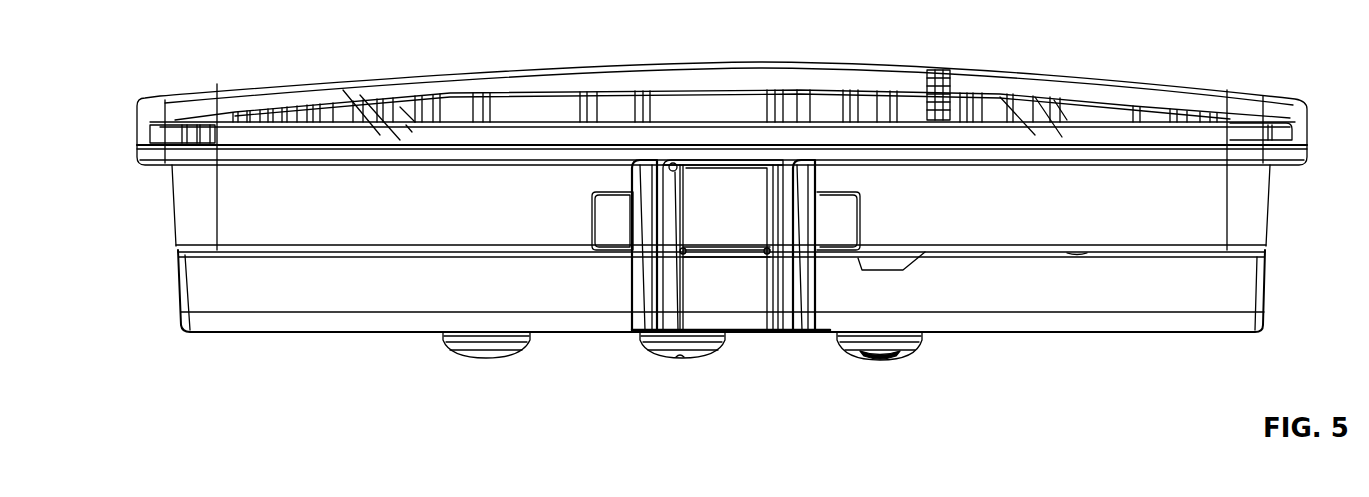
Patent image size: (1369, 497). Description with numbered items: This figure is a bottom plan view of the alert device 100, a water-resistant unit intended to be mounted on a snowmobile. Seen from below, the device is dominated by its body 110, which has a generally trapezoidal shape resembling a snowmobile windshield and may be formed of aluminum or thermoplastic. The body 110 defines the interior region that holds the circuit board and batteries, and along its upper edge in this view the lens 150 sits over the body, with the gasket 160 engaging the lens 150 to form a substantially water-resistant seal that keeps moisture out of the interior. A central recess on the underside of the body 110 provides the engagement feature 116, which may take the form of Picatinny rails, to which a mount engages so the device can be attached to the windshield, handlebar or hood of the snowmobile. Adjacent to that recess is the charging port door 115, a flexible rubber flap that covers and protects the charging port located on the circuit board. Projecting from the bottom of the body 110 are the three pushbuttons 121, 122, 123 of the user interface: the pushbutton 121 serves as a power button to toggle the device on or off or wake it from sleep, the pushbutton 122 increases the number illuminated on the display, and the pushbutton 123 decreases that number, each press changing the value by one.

The alert device 100 is at (200, 63).
The body 110 is at (1274, 208).
The charging port door 115 is at (869, 265).
The engagement feature 116 is at (730, 199).
The pushbutton 121 is at (907, 356).
The pushbutton 122 is at (668, 360).
The pushbutton 123 is at (487, 360).
The lens 150 is at (1141, 83).
The gasket 160 is at (713, 123).